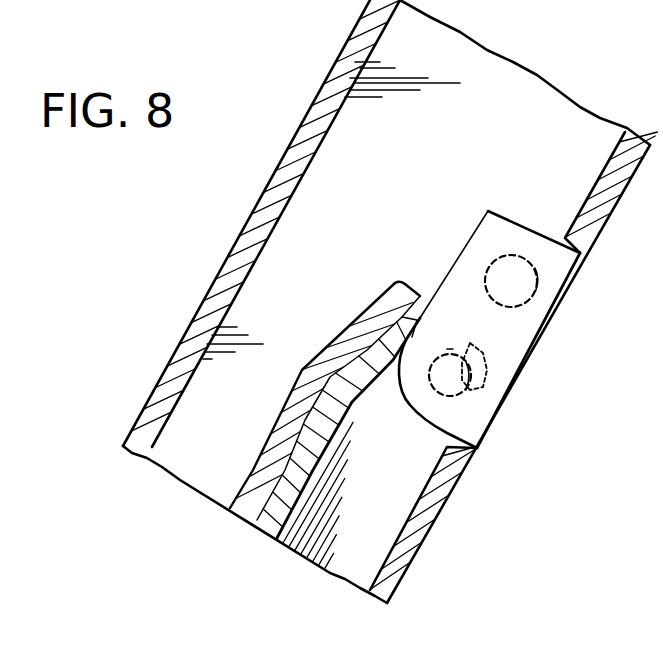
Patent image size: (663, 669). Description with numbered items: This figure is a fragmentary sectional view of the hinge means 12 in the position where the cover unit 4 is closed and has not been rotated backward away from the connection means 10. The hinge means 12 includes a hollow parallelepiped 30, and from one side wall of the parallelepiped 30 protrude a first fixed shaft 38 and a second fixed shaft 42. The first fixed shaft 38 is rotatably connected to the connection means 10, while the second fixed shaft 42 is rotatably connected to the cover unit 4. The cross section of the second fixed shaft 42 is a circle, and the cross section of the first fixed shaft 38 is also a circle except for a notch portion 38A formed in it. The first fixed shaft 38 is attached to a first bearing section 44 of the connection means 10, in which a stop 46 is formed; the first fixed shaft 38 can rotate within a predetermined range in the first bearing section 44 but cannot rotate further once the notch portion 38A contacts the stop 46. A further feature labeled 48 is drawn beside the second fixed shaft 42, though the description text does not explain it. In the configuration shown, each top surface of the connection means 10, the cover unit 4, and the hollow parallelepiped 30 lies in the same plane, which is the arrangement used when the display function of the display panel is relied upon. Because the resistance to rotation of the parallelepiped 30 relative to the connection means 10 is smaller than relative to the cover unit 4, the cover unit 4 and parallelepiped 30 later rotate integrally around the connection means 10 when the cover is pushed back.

The cover unit 4 is at (243, 233).
The connection means 10 is at (438, 497).
The hinge means 12 is at (337, 376).
The hollow parallelepiped 30 is at (513, 240).
The first fixed shaft 38 is at (450, 362).
The notch portion 38A is at (494, 357).
The second fixed shaft 42 is at (523, 292).
The first bearing section 44 is at (487, 368).
The stop 46 is at (470, 383).
The edge of opening 48 is at (577, 289).